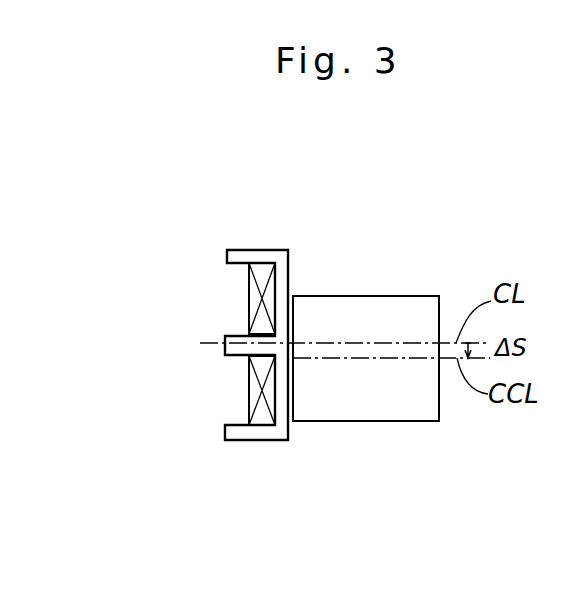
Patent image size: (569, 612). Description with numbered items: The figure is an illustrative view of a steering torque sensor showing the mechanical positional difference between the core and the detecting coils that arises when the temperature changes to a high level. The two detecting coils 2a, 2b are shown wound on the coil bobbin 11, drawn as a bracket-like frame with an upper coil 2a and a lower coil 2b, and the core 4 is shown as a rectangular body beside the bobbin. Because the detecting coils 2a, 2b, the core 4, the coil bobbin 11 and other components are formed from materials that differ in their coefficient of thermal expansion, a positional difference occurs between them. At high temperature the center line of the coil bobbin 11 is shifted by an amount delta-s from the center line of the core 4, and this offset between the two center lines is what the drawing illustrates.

The coil bobbin 11 is at (288, 251).
The detecting coil 2a is at (250, 303).
The detecting coil 2b is at (250, 396).
The core 4 is at (402, 305).